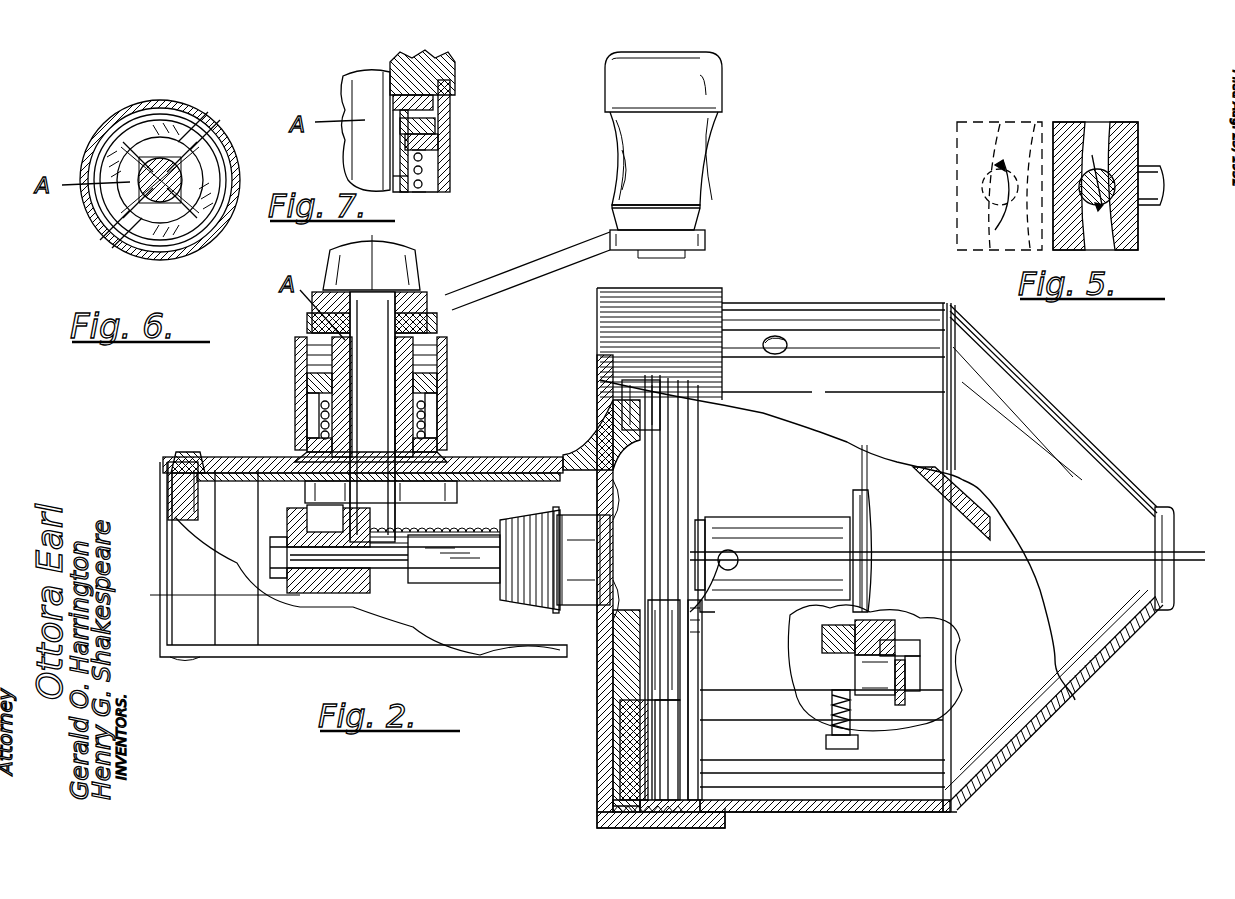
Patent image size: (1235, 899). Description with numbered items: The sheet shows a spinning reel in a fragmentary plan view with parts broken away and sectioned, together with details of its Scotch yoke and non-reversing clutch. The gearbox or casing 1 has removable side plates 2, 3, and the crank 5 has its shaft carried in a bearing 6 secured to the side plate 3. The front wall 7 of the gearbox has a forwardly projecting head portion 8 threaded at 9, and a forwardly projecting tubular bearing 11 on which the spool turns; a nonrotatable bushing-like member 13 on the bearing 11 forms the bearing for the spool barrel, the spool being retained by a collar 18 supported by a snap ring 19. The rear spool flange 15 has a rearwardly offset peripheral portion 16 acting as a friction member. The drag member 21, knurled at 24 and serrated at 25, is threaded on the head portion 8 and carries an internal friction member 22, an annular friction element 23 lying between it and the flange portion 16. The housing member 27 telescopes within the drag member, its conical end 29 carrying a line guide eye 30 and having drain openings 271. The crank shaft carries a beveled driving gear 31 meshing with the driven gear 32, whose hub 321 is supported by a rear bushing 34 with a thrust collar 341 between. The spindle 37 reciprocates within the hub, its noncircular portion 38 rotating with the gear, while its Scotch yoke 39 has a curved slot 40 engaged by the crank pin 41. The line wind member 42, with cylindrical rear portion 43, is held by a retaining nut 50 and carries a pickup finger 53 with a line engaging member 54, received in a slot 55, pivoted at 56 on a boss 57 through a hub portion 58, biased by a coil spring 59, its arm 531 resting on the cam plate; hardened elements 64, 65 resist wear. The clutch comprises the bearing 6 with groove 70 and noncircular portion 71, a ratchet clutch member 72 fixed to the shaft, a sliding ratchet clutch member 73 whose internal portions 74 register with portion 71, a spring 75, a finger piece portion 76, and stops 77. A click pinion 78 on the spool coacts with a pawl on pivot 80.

In FIG. 2, the gearbox or casing 1 is at (168, 486).
In FIG. 2, the side plate 2 is at (220, 655).
In FIG. 2, the side plate 3 is at (245, 462).
In FIG. 7, the crank 5 is at (448, 62).
In FIG. 2, the crank 5 is at (535, 275).
In FIG. 6, the bearing 6 is at (120, 165).
In FIG. 7, the bearing 6 is at (400, 180).
In FIG. 2, the bearing 6 is at (262, 355).
In FIG. 2, the front wall 7 is at (600, 700).
In FIG. 2, the head portion 8 is at (625, 745).
In FIG. 2, the threads 9 is at (625, 812).
In FIG. 2, the tubular bearing 11 is at (695, 640).
In FIG. 2, the bushing-like member 13 is at (600, 620).
In FIG. 2, the rear spool flange 15 is at (668, 720).
In FIG. 2, the peripheral portion 16 is at (650, 690).
In FIG. 2, the collar 18 is at (690, 520).
In FIG. 2, the snap ring 19 is at (670, 500).
In FIG. 2, the drag member 21 is at (735, 303).
In FIG. 2, the friction member 22 is at (775, 812).
In FIG. 2, the friction element 23 is at (690, 805).
In FIG. 2, the knurling 24 is at (690, 296).
In FIG. 2, the teeth or serrations 25 is at (600, 330).
In FIG. 2, the housing member 27 is at (865, 320).
In FIG. 2, the conical end 29 is at (1060, 430).
In FIG. 2, the line guide eye 30 is at (1170, 515).
In FIG. 2, the beveled driving gear 31 is at (188, 458).
In FIG. 2, the driven gear 32 is at (520, 590).
In FIG. 2, the bearing bushing 34 is at (580, 605).
In FIG. 5, the spindle 37 is at (1152, 180).
In FIG. 2, the spindle 37 is at (390, 583).
In FIG. 2, the flattened or noncircular portion 38 is at (385, 616).
In FIG. 5, the Scotch yoke 39 is at (1130, 140).
In FIG. 2, the Scotch yoke 39 is at (310, 598).
In FIG. 5, the slot 40 is at (1085, 225).
In FIG. 2, the slot 40 is at (335, 530).
In FIG. 5, the crank pin 41 is at (1118, 200).
In FIG. 2, the crank pin 41 is at (300, 480).
In FIG. 2, the line wind member 42 is at (920, 648).
In FIG. 2, the cylindrical rear portion 43 is at (830, 775).
In FIG. 2, the retaining nut 50 is at (1010, 560).
In FIG. 2, the pickup finger 53 is at (822, 633).
In FIG. 2, the line engaging member 54 is at (735, 552).
In FIG. 2, the slot 55 is at (795, 520).
In FIG. 2, the pivot 56 is at (920, 668).
In FIG. 2, the boss 57 is at (905, 685).
In FIG. 2, the hub portion 58 is at (890, 690).
In FIG. 2, the coil spring 59 is at (860, 740).
In FIG. 2, the hardened element 64 is at (870, 540).
In FIG. 2, the hardened element 65 is at (705, 590).
In FIG. 2, the peripheral groove 70 is at (320, 410).
In FIG. 6, the noncircular portion 71 is at (190, 130).
In FIG. 7, the noncircular portion 71 is at (440, 135).
In FIG. 7, the ratchet clutch member 72 is at (435, 100).
In FIG. 2, the ratchet clutch member 72 is at (400, 300).
In FIG. 6, the ratchet clutch member 73 is at (135, 115).
In FIG. 7, the ratchet clutch member 73 is at (440, 125).
In FIG. 2, the ratchet clutch member 73 is at (307, 385).
In FIG. 6, the internal portions 74 is at (95, 122).
In FIG. 7, the spring 75 is at (422, 172).
In FIG. 2, the spring 75 is at (426, 420).
In FIG. 6, the finger piece portion 76 is at (100, 140).
In FIG. 7, the finger piece portion 76 is at (452, 155).
In FIG. 2, the finger piece portion 76 is at (447, 370).
In FIG. 6, the stops 77 is at (125, 200).
In FIG. 2, the click pinion 78 is at (655, 470).
In FIG. 2, the pivot 80 is at (660, 405).
In FIG. 2, the openings 271 is at (770, 354).
In FIG. 2, the hub 321 is at (705, 615).
In FIG. 2, the thrust collar 341 is at (555, 612).
In FIG. 2, the pickup finger arm 531 is at (890, 625).